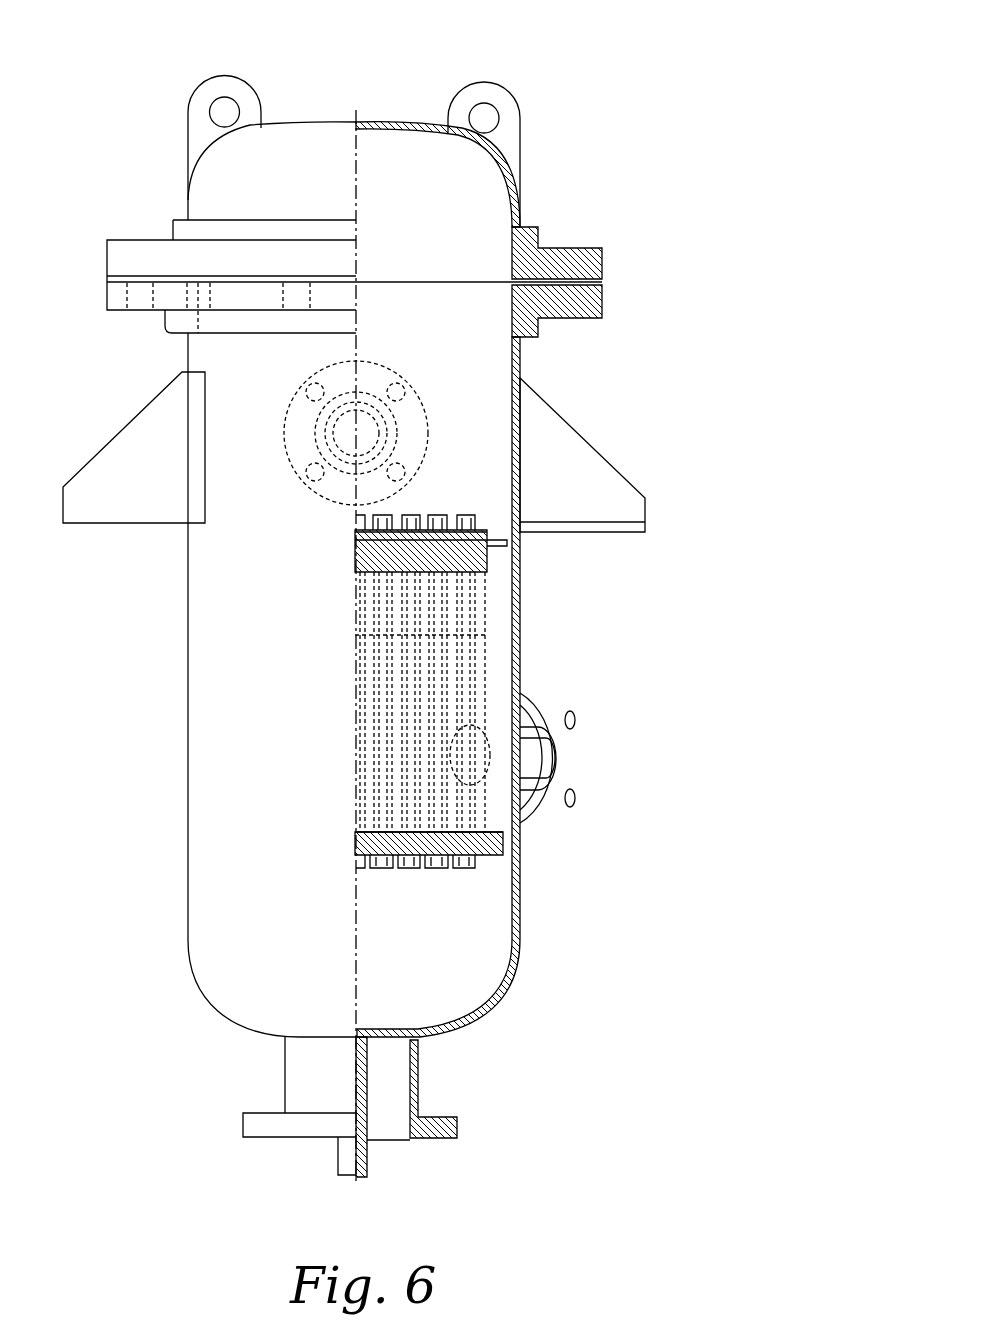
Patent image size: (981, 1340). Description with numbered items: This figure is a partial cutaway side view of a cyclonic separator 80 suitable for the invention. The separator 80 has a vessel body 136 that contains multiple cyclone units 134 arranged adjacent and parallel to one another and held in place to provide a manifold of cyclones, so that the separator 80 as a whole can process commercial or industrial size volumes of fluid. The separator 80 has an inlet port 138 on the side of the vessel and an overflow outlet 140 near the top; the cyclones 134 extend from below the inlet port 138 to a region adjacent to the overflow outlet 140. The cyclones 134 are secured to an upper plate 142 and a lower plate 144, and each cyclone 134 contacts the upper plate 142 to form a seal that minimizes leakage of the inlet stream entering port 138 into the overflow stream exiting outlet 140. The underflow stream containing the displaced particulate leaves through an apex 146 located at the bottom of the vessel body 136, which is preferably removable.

The cyclonic separator 80 is at (368, 96).
The cyclone units 134 is at (477, 617).
The vessel body 136 is at (520, 930).
The inlet port 138 is at (592, 724).
The overflow outlet 140 is at (410, 418).
The upper plate 142 is at (488, 558).
The lower plate 144 is at (493, 845).
The apex 146 is at (363, 1158).